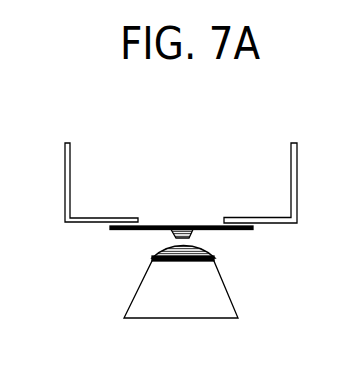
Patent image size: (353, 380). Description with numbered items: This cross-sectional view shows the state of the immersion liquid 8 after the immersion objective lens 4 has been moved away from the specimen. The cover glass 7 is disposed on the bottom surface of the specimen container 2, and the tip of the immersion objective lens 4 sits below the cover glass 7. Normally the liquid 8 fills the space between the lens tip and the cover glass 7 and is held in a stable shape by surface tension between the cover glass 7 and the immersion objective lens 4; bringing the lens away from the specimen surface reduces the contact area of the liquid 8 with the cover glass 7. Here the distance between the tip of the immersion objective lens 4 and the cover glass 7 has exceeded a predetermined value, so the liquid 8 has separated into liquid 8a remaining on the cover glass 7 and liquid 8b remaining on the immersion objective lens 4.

The specimen container 2 is at (297, 192).
The cover glass 7 is at (240, 231).
The liquid 8 is at (63, 226).
The liquid on the cover glass 8a is at (172, 235).
The liquid on the immersion objective lens 8b is at (156, 258).
The immersion objective lens 4 is at (230, 302).